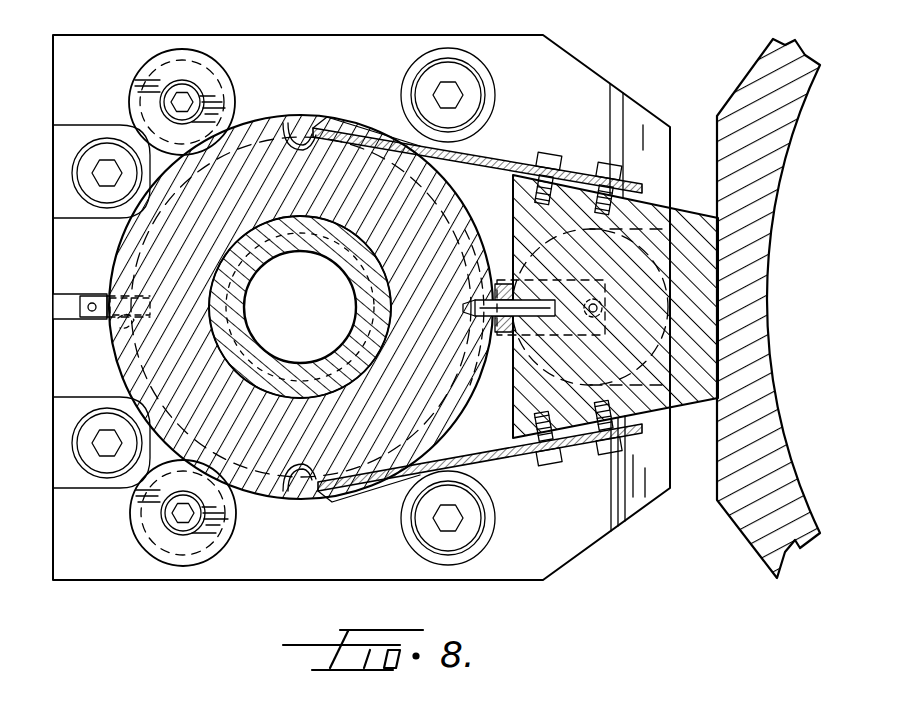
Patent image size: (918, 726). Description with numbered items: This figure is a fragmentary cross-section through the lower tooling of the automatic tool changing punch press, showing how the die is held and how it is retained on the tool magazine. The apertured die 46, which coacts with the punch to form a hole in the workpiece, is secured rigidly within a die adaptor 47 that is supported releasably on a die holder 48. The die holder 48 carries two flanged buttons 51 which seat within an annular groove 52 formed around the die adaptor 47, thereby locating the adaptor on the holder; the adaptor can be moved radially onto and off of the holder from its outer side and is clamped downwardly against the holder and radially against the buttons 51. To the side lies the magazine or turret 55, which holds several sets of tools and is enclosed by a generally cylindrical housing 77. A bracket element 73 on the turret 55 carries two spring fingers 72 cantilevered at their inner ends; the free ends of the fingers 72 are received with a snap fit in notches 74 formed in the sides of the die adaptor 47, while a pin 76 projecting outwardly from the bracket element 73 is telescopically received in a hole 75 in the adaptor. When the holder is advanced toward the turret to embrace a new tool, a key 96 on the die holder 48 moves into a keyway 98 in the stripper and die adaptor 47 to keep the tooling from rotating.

The die 46 is at (250, 352).
The die adaptor 47 is at (384, 133).
The die holder 48 is at (583, 77).
The flanged buttons 51 is at (192, 52).
The annular groove 52 is at (125, 262).
The magazine (turret) 55 is at (735, 525).
The spring fingers 72 is at (487, 160).
The bracket element 73 is at (642, 206).
The notches 74 is at (300, 126).
The hole 75 is at (470, 375).
The pin 76 is at (527, 303).
The housing 77 is at (75, 25).
The key 96 is at (82, 302).
The keyway 98 is at (122, 338).